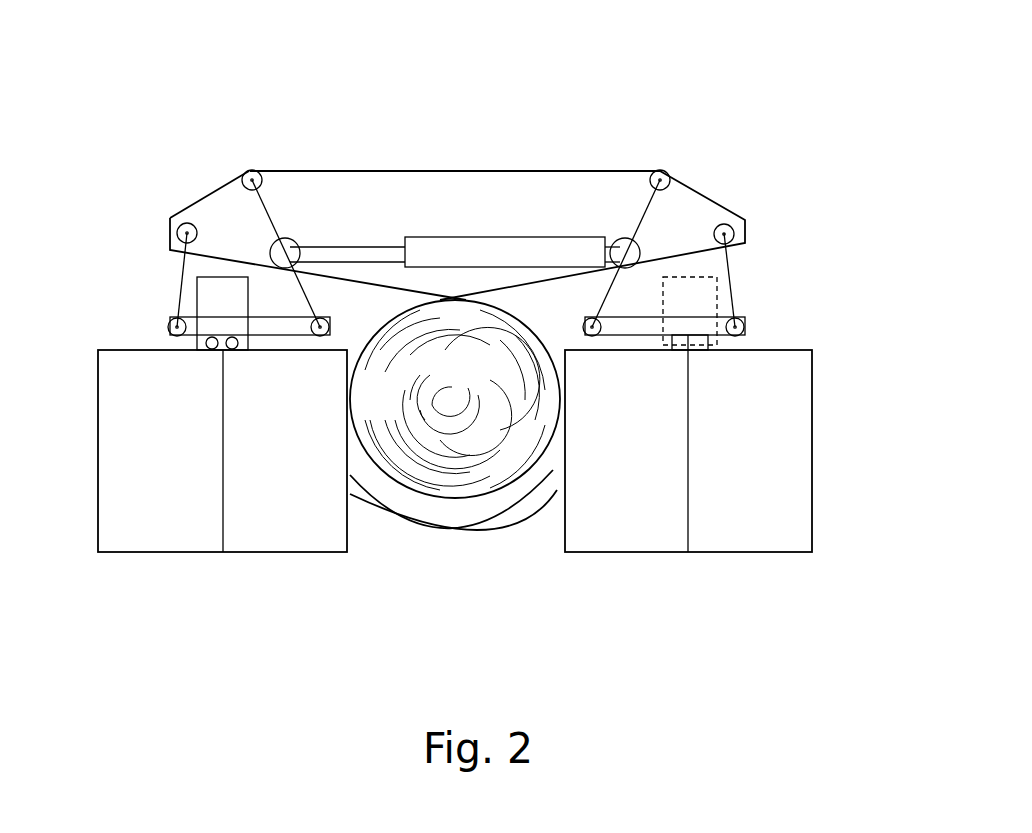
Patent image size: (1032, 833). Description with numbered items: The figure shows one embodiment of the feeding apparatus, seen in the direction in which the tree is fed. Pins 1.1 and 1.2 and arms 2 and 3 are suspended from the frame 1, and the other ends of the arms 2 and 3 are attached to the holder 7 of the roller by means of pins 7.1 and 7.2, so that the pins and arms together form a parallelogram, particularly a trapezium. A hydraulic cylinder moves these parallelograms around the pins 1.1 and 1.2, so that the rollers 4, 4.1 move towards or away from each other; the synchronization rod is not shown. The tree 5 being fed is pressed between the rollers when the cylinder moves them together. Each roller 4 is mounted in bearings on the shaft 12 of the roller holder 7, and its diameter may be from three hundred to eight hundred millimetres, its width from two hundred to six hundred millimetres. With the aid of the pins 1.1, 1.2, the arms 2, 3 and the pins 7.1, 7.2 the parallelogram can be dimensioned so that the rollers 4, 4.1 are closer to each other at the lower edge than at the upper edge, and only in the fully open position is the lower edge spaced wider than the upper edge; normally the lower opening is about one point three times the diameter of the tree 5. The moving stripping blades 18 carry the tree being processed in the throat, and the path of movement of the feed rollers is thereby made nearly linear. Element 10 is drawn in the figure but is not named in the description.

The frame 1 is at (450, 200).
The pin 1.1 is at (670, 176).
The pin 1.2 is at (733, 235).
The arm 2 is at (737, 290).
The arm 3 is at (272, 215).
The roller 4 is at (97, 390).
The roller 4.1 is at (602, 543).
The tree 5 is at (445, 500).
The holder 7 is at (625, 336).
The pin 7.1 is at (320, 336).
The pin 7.2 is at (178, 336).
The sensor 10 is at (688, 277).
The shaft 12 is at (700, 348).
The stripping blade 18 is at (520, 510).